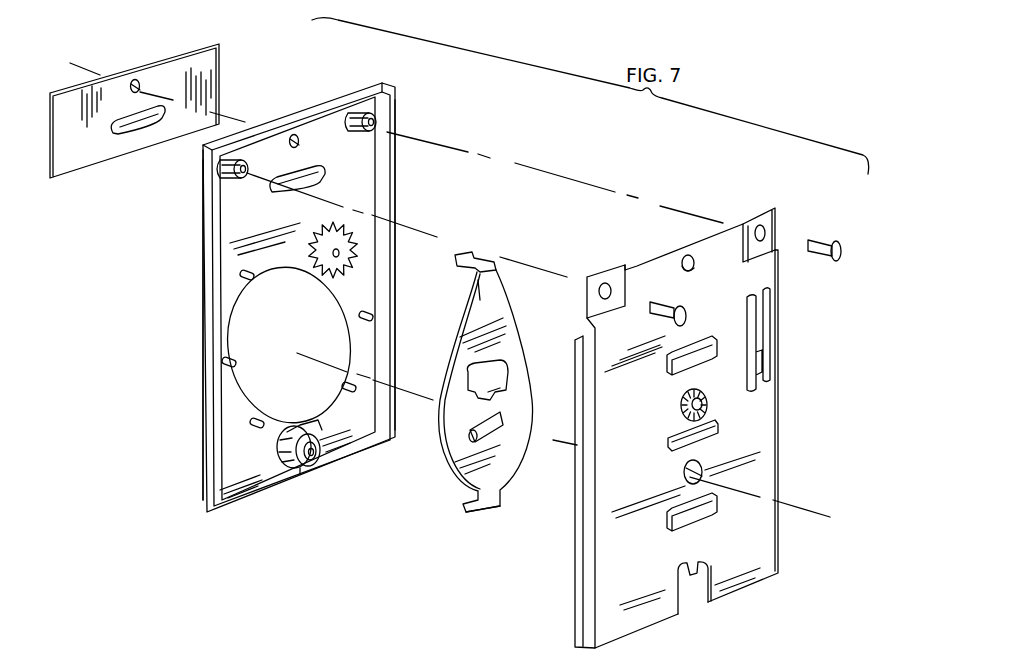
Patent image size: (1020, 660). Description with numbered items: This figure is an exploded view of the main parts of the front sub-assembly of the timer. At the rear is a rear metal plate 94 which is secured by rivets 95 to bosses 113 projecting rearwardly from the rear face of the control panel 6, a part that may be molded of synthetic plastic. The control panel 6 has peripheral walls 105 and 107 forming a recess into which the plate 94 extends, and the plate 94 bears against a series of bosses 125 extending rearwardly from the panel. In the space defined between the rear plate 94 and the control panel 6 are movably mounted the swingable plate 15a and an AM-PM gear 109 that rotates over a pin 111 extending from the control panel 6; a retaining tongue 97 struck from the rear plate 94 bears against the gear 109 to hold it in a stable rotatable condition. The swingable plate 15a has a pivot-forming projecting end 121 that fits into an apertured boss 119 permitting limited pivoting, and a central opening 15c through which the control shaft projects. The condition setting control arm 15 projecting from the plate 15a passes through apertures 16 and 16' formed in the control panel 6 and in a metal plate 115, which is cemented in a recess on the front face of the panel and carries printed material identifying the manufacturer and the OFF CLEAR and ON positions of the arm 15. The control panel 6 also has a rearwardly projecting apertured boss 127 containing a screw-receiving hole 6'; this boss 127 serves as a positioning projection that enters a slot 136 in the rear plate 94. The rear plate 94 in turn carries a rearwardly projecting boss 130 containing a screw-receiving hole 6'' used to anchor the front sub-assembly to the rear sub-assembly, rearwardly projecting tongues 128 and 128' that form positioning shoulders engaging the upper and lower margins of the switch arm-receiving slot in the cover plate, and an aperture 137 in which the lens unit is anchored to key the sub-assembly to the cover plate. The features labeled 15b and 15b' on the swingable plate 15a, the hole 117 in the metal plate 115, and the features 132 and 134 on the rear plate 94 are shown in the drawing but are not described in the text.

The control panel 6 is at (176, 325).
The screw-receiving hole 6' is at (324, 480).
The screw-receiving hole 6'' is at (720, 410).
The condition setting control arm 15 is at (464, 252).
The swingable plate 15a is at (470, 304).
The bracket opening 15b is at (516, 365).
The bracket opening edge 15b' is at (532, 382).
The central opening 15c is at (470, 432).
The aperture 16 is at (312, 164).
The aperture 16' is at (126, 148).
The rear metal plate 94 is at (652, 278).
The rivets 95 is at (648, 307).
The retaining tongue 97 is at (760, 330).
The peripheral wall 105 is at (320, 108).
The peripheral wall 107 is at (388, 195).
The AM-PM gear 109 is at (302, 293).
The pin 111 is at (358, 247).
The bosses 113 is at (380, 118).
The metal plate 115 is at (190, 50).
The hole 117 is at (140, 84).
The apertured boss 119 is at (313, 428).
The pivot-forming projecting end 121 is at (466, 496).
The bosses 125 is at (250, 282).
The apertured boss 127 is at (295, 470).
The rearwardly projecting tongue 128 is at (666, 378).
The rearwardly projecting tongue 128' is at (664, 524).
The rearwardly projecting boss 130 is at (702, 400).
The tab 132 is at (668, 443).
The hole 134 is at (703, 466).
The slot 136 is at (694, 592).
The aperture 137 is at (688, 255).